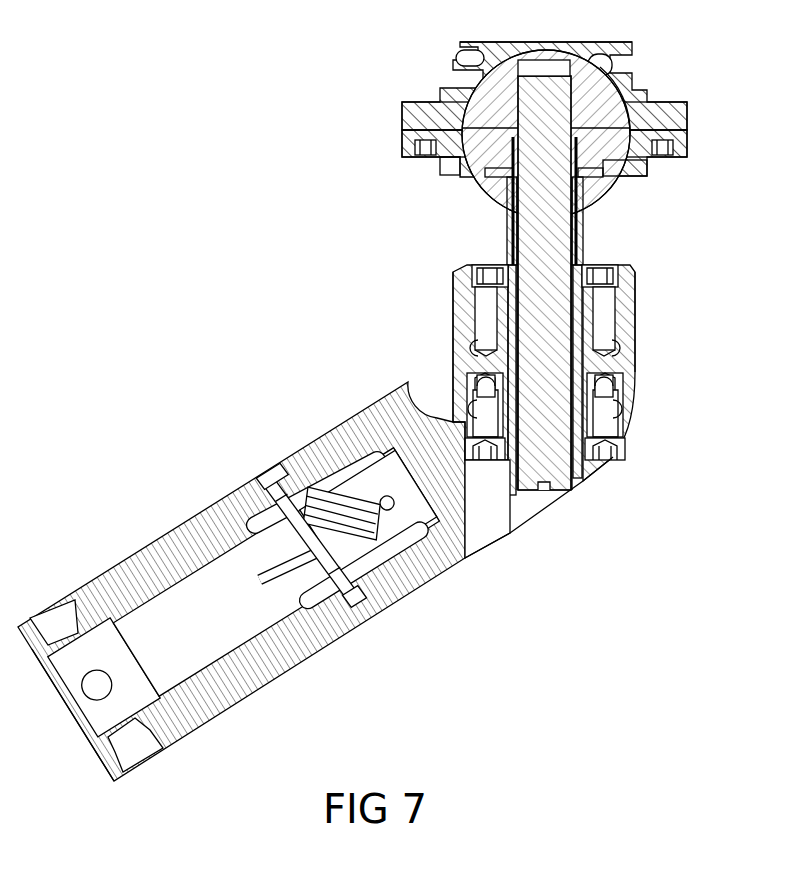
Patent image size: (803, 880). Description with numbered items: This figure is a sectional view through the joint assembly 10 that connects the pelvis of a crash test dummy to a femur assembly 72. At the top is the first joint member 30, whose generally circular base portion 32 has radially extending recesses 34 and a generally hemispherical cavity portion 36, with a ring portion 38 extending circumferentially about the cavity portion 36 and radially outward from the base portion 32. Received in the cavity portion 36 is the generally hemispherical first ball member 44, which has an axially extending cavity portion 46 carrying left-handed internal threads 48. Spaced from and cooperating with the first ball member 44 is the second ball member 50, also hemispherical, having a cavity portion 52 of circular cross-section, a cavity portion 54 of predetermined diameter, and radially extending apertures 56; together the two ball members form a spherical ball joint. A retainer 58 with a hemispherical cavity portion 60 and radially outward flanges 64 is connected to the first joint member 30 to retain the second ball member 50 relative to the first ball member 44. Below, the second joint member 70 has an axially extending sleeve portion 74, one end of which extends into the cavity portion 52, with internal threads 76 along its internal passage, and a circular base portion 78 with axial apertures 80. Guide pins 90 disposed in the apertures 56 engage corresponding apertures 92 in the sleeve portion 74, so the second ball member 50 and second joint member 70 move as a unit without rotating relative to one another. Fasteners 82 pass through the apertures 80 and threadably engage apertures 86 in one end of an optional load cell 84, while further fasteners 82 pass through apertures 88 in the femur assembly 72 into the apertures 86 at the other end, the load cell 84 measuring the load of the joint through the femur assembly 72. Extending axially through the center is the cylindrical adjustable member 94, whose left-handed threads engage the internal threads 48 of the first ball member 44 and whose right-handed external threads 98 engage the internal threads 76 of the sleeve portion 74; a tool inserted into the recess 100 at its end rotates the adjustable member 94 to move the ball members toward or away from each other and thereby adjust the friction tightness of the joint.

The joint assembly 10 is at (662, 268).
The first joint member 30 is at (642, 90).
The base portion 32 is at (482, 46).
The recesses 34 is at (465, 52).
The cavity portion 36 is at (612, 60).
The ring portion 38 is at (689, 113).
The first ball member 44 is at (483, 95).
The cavity portion 46 is at (552, 60).
The internal threads 48 is at (592, 103).
The second ball member 50 is at (588, 200).
The cavity portion 52 is at (508, 194).
The cavity portion 54 is at (586, 205).
The apertures 56 is at (472, 172).
The retainer 58 is at (652, 170).
The cavity portion 60 is at (689, 133).
The flanges 64 is at (680, 148).
The second joint member 70 is at (541, 389).
The femur assembly 72 is at (192, 500).
The sleeve portion 74 is at (512, 248).
The internal threads 76 is at (512, 218).
The base portion 78 is at (455, 290).
The apertures 80 is at (612, 318).
The fasteners 82 is at (478, 272).
The load cell 84 is at (628, 372).
The apertures 86 is at (480, 348).
The apertures 88 is at (503, 508).
The guide pins 90 is at (445, 162).
The apertures 92 is at (432, 150).
The adjustable member 94 is at (535, 460).
The external threads 98 is at (582, 247).
The recess 100 is at (548, 488).